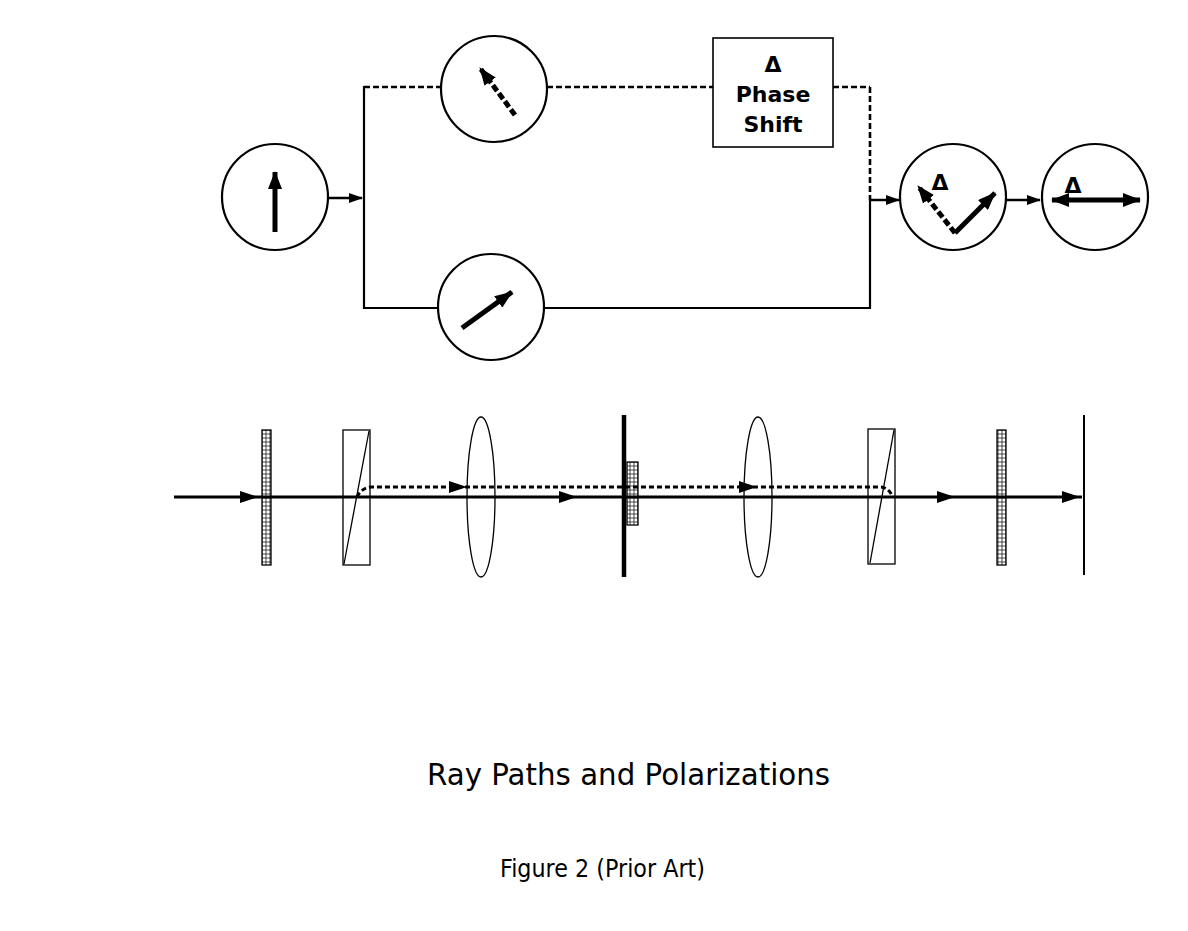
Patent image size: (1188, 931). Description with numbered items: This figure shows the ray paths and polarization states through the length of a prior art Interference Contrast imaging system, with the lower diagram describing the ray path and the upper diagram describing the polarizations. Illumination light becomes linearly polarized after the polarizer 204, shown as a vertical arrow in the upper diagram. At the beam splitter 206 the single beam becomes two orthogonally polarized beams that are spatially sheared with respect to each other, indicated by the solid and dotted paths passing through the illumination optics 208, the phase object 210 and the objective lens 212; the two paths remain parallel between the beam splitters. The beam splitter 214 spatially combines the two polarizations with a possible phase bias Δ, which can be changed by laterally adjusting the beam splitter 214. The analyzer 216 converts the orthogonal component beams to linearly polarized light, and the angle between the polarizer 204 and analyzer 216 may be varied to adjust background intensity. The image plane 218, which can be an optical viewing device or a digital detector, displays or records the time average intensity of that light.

The polarizer 204 is at (263, 548).
The beam splitter 206 is at (357, 555).
The illumination optics 208 is at (487, 548).
The phase object 210 is at (623, 548).
The objective lens 212 is at (754, 551).
The beam splitter 214 is at (883, 555).
The analyzer 216 is at (990, 543).
The image plane 218 is at (1085, 549).